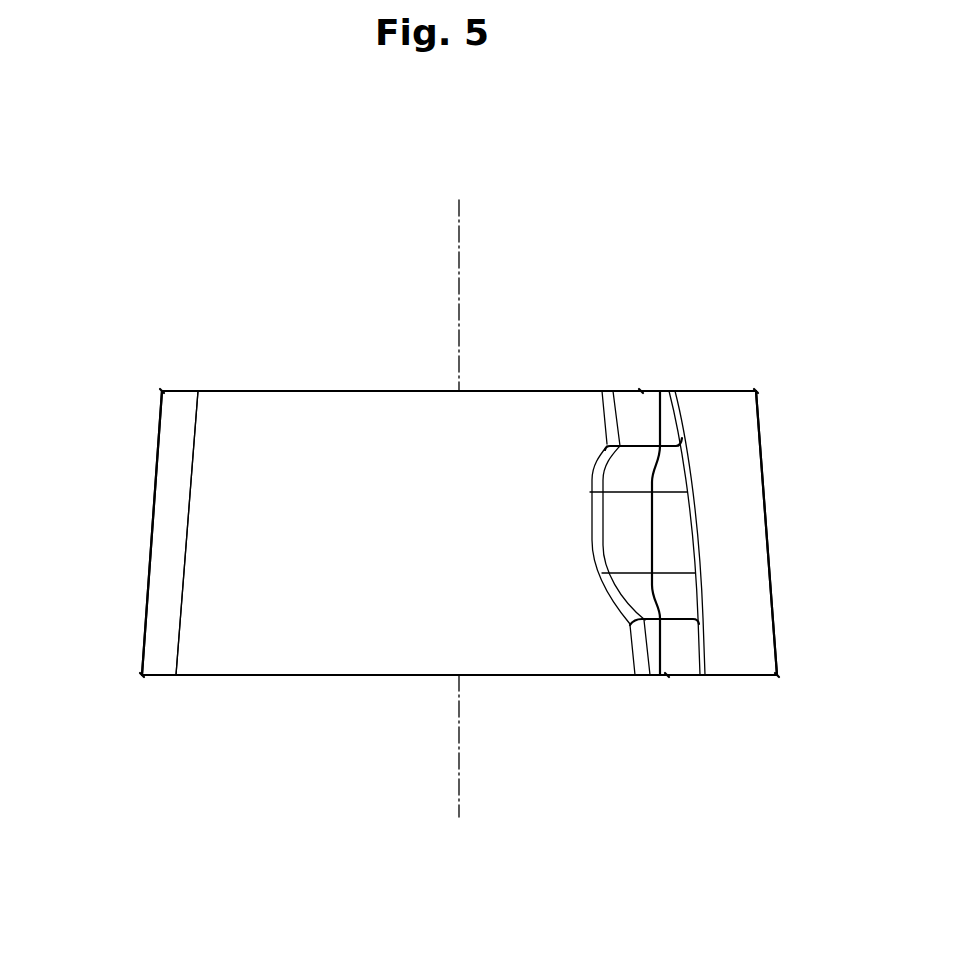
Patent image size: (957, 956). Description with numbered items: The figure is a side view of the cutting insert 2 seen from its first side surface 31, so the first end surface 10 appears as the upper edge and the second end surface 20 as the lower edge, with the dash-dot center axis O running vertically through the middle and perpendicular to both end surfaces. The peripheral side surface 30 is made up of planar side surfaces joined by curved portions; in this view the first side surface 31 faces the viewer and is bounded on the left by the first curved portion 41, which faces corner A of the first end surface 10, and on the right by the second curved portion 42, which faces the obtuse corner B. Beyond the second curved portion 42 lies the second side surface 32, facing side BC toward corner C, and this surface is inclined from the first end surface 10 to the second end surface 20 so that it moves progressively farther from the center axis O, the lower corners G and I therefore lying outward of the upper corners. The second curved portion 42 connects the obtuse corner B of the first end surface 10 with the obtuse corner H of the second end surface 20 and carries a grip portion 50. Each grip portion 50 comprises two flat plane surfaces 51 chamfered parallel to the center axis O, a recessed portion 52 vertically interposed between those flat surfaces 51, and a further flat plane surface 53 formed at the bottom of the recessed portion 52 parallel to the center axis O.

The cutting insert 2 is at (439, 937).
The first end surface 10 is at (250, 391).
The second end surface 20 is at (253, 675).
The peripheral side surface 30 is at (230, 559).
The first side surface 31 is at (350, 630).
The second side surface 32 is at (730, 655).
The first curved portion 41 is at (163, 630).
The second curved portion 42 is at (680, 675).
The grip portion 50 is at (765, 533).
The flat plane surface 51 is at (643, 420).
The recessed portion 52 is at (670, 509).
The flat plane surface 53 is at (675, 540).
The corner A is at (162, 391).
The corner B is at (641, 400).
The corner C is at (756, 391).
The corner G is at (142, 675).
The corner H is at (667, 677).
The corner I is at (777, 675).
The center axis O is at (459, 493).